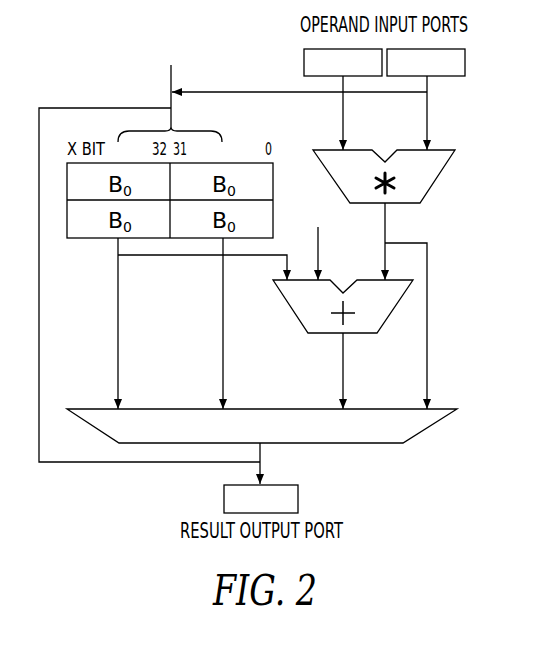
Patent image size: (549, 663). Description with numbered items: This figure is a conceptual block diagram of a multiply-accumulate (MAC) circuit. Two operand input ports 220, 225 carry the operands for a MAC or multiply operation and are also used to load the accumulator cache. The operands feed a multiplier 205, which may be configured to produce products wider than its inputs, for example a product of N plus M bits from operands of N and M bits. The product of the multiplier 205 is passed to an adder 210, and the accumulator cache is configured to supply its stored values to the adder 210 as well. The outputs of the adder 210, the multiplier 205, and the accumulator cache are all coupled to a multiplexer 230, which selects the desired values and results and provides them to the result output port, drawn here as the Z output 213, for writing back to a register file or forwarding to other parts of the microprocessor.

The operand input port 220 is at (304, 64).
The operand input port 225 is at (465, 63).
The multiplier 205 is at (438, 178).
The adder 210 is at (385, 322).
The multiplexer 230 is at (263, 409).
The Z result output port 213 is at (298, 495).